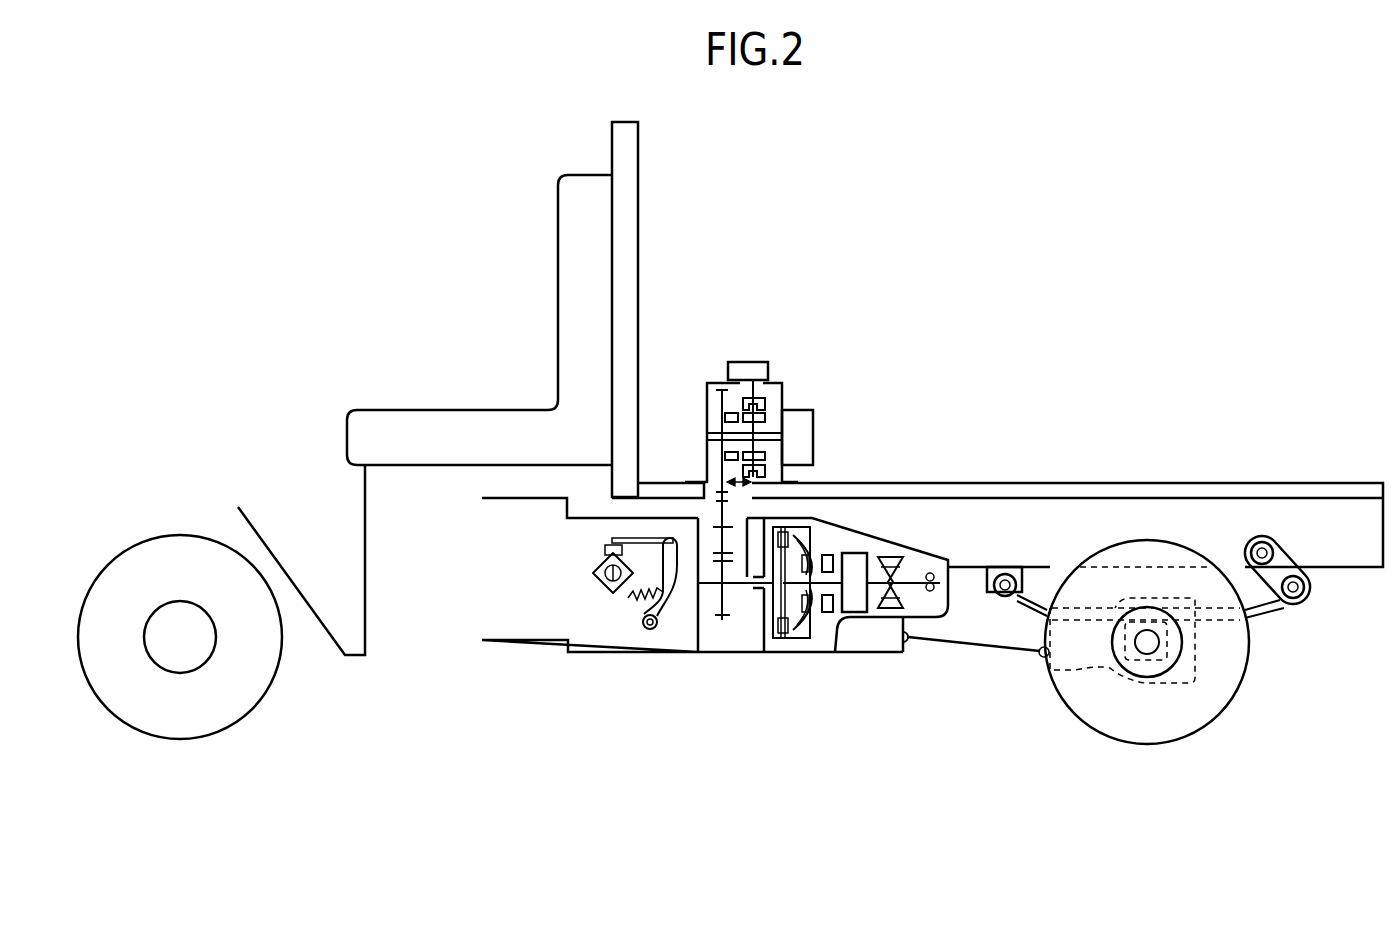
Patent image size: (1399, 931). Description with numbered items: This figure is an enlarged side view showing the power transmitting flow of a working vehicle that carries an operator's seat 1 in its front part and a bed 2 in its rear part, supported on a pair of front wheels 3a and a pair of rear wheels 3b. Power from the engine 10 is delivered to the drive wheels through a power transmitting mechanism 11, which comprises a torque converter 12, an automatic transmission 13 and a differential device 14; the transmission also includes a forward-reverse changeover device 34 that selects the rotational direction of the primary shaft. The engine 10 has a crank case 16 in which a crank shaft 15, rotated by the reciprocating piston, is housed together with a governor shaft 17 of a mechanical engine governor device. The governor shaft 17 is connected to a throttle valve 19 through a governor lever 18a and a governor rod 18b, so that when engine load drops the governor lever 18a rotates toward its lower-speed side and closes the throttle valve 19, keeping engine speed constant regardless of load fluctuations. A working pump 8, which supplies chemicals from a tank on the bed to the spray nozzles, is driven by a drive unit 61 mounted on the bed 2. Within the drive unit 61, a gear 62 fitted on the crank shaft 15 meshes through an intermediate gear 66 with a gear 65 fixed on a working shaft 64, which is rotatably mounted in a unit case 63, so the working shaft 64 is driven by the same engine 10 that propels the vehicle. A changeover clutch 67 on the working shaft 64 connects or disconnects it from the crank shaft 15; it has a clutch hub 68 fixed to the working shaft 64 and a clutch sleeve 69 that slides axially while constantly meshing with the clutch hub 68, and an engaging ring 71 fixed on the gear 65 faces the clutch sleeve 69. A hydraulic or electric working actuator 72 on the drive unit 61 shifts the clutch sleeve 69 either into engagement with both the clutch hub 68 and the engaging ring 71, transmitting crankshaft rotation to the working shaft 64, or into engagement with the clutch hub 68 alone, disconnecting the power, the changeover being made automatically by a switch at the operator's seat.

The operator's seat 1 is at (458, 418).
The bed 2 is at (1153, 484).
The front wheels 3a is at (251, 680).
The rear wheels 3b is at (1147, 745).
The working pump 8 is at (805, 440).
The engine 10 is at (497, 628).
The power transmitting mechanism 11 is at (818, 697).
The torque converter 12 is at (795, 643).
The automatic transmission 13 is at (892, 553).
The differential device 14 is at (1068, 672).
The crank shaft 15 is at (708, 583).
The crank case 16 is at (595, 643).
The governor shaft 17 is at (643, 628).
The governor lever 18a is at (665, 605).
The governor rod 18b is at (618, 538).
The throttle valve 19 is at (602, 582).
The forward-reverse changeover device 34 is at (857, 605).
The drive unit 61 is at (700, 398).
The gear 62 is at (723, 620).
The unit case 63 is at (773, 393).
The working shaft 64 is at (770, 430).
The gear 65 is at (718, 388).
The intermediate gear 66 is at (724, 505).
The changeover clutch 67 is at (767, 392).
The clutch hub 68 is at (765, 457).
The clutch sleeve 69 is at (763, 402).
The engaging ring 71 is at (725, 453).
The working actuator 72 is at (755, 360).